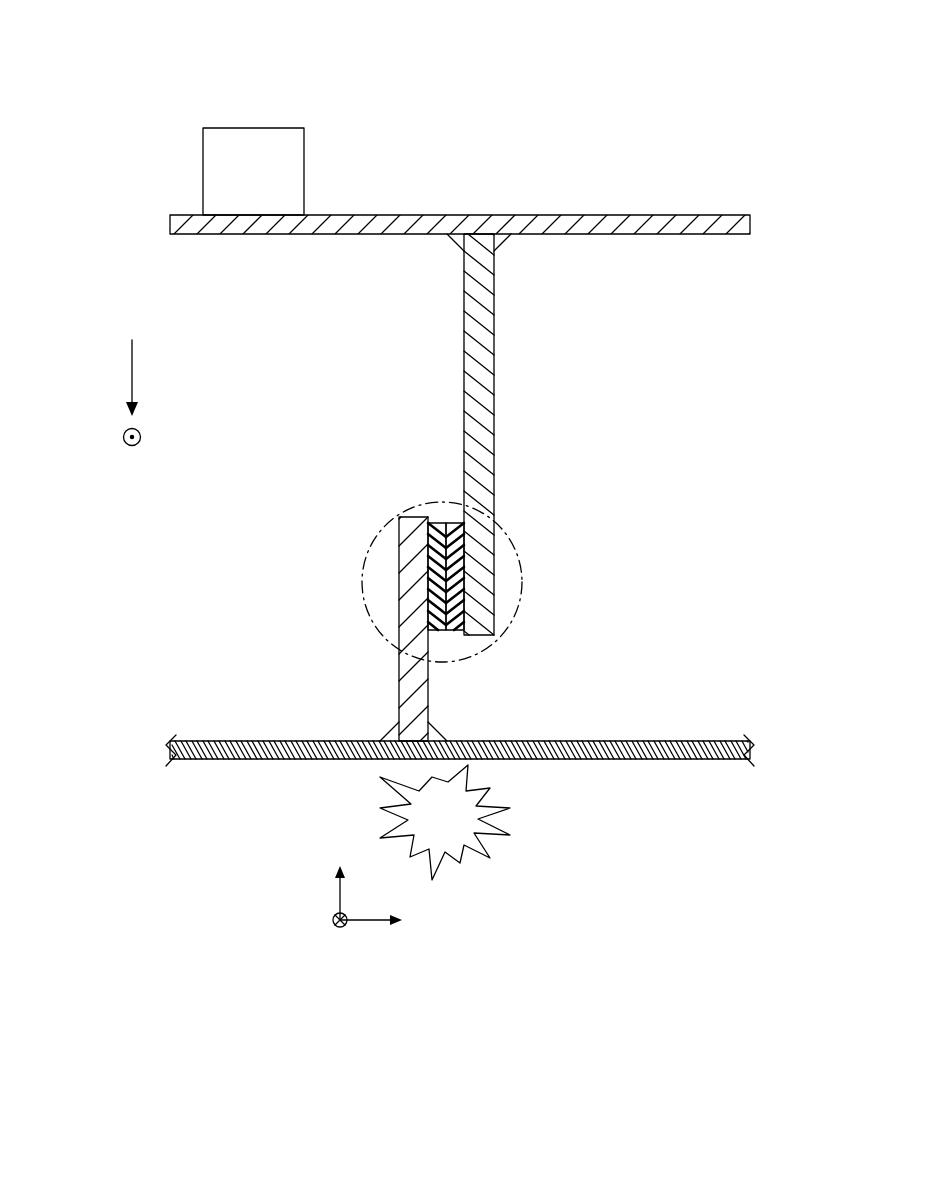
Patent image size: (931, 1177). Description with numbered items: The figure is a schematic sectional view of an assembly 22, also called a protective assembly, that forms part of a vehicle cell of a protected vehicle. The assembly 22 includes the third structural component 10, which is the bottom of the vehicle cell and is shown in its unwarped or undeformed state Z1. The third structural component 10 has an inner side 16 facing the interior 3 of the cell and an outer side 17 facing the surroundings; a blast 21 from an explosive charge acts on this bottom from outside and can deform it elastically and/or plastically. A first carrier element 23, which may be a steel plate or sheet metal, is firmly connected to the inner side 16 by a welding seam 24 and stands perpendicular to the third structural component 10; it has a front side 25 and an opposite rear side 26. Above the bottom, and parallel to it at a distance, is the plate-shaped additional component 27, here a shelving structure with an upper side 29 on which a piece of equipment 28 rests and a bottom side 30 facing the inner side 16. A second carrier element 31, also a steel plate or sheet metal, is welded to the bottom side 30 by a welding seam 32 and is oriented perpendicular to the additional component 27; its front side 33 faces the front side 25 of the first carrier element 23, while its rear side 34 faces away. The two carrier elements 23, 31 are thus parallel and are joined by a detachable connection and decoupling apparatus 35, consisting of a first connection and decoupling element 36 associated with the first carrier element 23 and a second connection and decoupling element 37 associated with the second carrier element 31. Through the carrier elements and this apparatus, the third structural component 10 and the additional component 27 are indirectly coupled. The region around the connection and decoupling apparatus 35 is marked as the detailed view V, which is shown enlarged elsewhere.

The interior 3 is at (632, 372).
The assembly 22 is at (457, 88).
The additional component 27 is at (664, 205).
The upper side 29 is at (590, 215).
The bottom side 30 is at (688, 234).
The piece of equipment 28 is at (272, 197).
The second carrier element 31 is at (502, 480).
The front side 33 is at (464, 302).
The rear side 34 is at (494, 417).
The welding seam 32 is at (502, 246).
The first carrier element 23 is at (391, 618).
The rear side 26 is at (399, 552).
The welding seam 24 is at (390, 735).
The front side 25 is at (428, 675).
The connection and decoupling apparatus 35 is at (457, 412).
The first connection and decoupling element 36 is at (437, 523).
The second connection and decoupling element 37 is at (455, 523).
The detailed view V is at (522, 578).
The third structural component 10 is at (708, 770).
The unwarped or undeformed state Z1 is at (460, 748).
The inner side 16 is at (637, 741).
The outer side 17 is at (602, 759).
The blast 21 is at (462, 829).